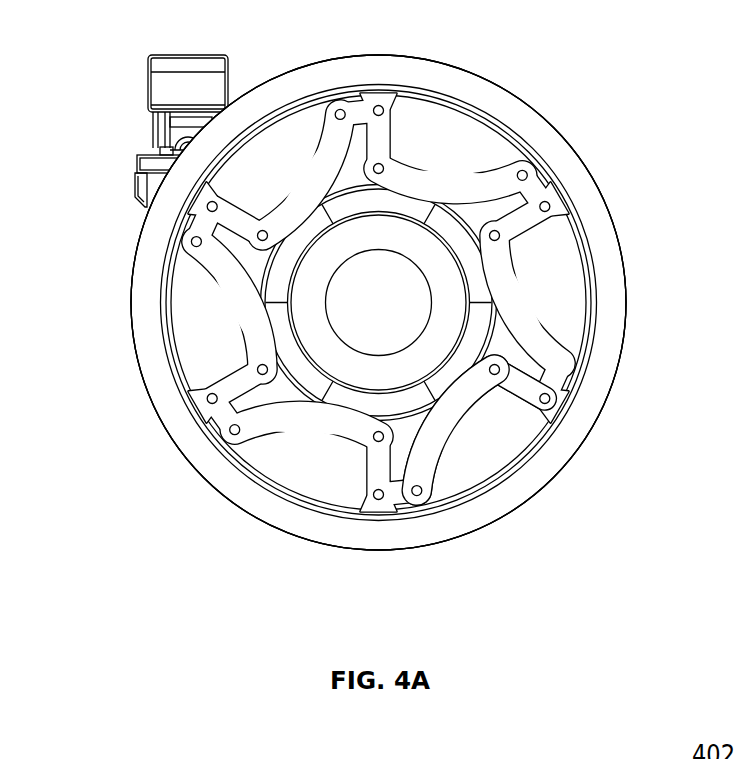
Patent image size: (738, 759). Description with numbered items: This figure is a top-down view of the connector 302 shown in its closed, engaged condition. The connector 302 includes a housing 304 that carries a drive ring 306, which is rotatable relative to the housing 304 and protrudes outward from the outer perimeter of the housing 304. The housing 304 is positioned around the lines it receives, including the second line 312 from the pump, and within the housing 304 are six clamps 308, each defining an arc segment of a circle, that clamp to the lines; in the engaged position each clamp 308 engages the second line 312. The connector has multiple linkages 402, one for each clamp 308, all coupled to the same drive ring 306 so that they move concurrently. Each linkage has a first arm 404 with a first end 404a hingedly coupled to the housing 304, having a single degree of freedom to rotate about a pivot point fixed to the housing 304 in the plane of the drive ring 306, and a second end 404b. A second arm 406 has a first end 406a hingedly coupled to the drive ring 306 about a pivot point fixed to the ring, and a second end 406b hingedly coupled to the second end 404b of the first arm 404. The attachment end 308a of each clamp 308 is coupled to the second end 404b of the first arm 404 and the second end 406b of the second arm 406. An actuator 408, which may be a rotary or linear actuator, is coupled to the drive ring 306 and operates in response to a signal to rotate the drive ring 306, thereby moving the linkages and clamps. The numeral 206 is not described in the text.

The optical assembly 206 is at (606, 130).
The connector 302 is at (645, 202).
The housing 304 is at (598, 466).
The drive ring 306 is at (587, 312).
The clamp 308 is at (287, 340).
The attachment end 308a is at (281, 382).
The second line 312 is at (403, 237).
The linkages 402 is at (200, 343).
The first arm 404 is at (497, 483).
The first end 404a is at (418, 493).
The second end 404b is at (497, 373).
The second arm 406 is at (604, 357).
The first end 406a is at (548, 400).
The second end 406b is at (496, 371).
The actuator 408 is at (148, 90).